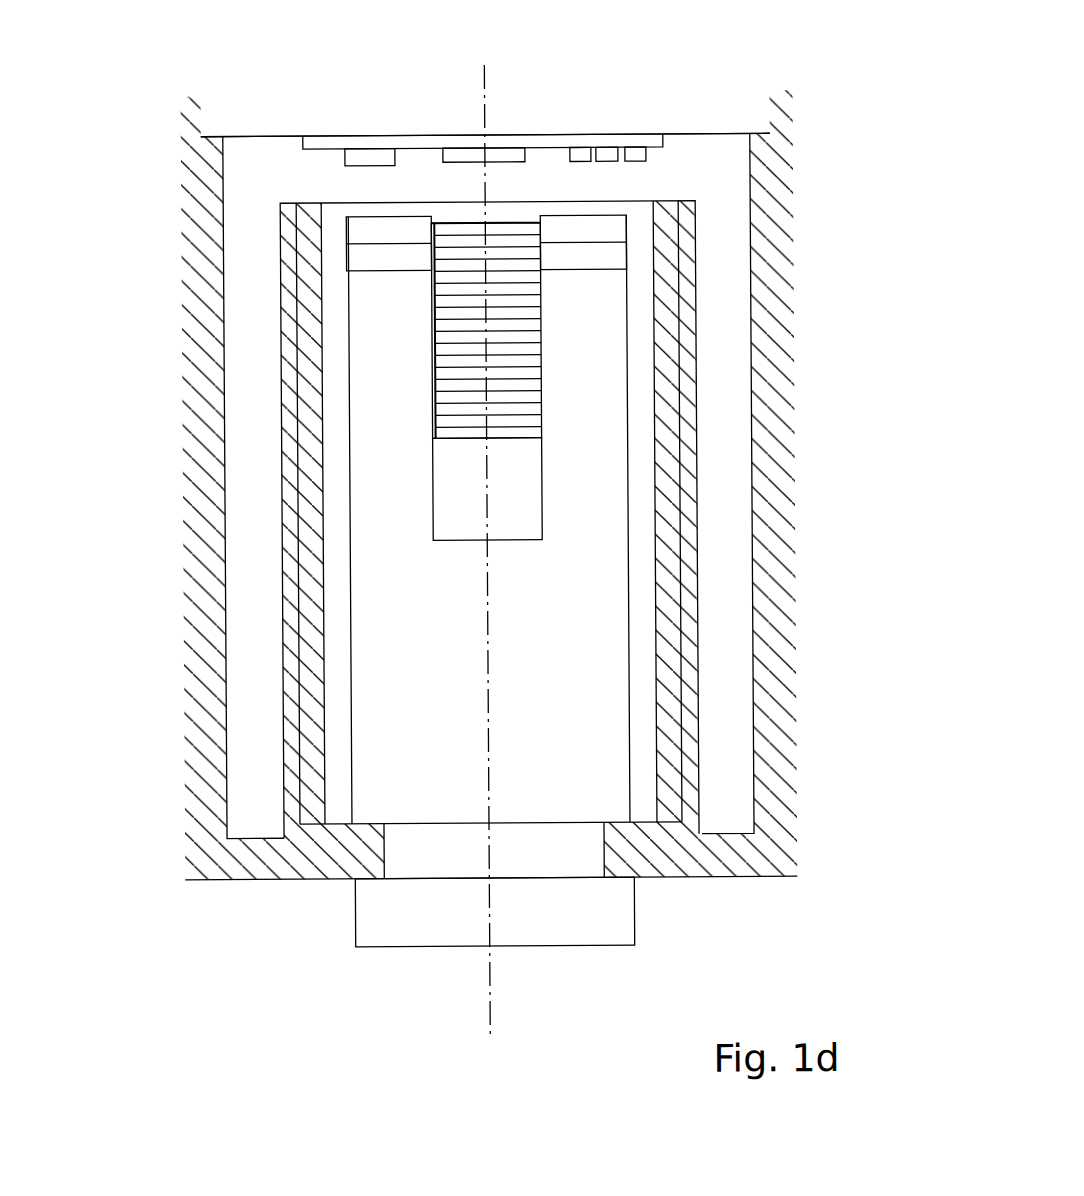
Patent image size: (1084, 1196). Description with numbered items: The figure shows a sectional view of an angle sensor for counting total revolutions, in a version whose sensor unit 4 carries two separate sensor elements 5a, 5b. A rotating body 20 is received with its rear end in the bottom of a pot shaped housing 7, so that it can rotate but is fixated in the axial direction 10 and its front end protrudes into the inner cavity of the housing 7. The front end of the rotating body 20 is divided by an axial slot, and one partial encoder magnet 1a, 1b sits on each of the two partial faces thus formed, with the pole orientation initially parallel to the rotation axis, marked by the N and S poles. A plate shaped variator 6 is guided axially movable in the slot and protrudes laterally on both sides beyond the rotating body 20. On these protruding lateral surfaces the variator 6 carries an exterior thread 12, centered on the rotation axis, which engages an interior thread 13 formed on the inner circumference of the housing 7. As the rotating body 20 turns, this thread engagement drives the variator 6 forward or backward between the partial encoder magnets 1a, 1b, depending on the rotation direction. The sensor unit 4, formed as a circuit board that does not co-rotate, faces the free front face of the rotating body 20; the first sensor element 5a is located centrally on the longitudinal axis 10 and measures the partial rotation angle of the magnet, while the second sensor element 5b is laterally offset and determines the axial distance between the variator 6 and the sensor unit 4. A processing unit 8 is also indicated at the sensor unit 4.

The encoder magnet component 1a is at (348, 243).
The encoder magnet component 1b is at (628, 242).
The sensor unit 4 is at (413, 115).
The sensor element 5a is at (500, 160).
The sensor element 5b is at (383, 155).
The variator 6 is at (477, 220).
The housing 7 is at (687, 387).
The processing unit 8 is at (632, 125).
The axial direction 10 is at (488, 986).
The exterior thread 12 is at (475, 420).
The interior thread 13 is at (307, 580).
The rotating body 20 is at (350, 695).